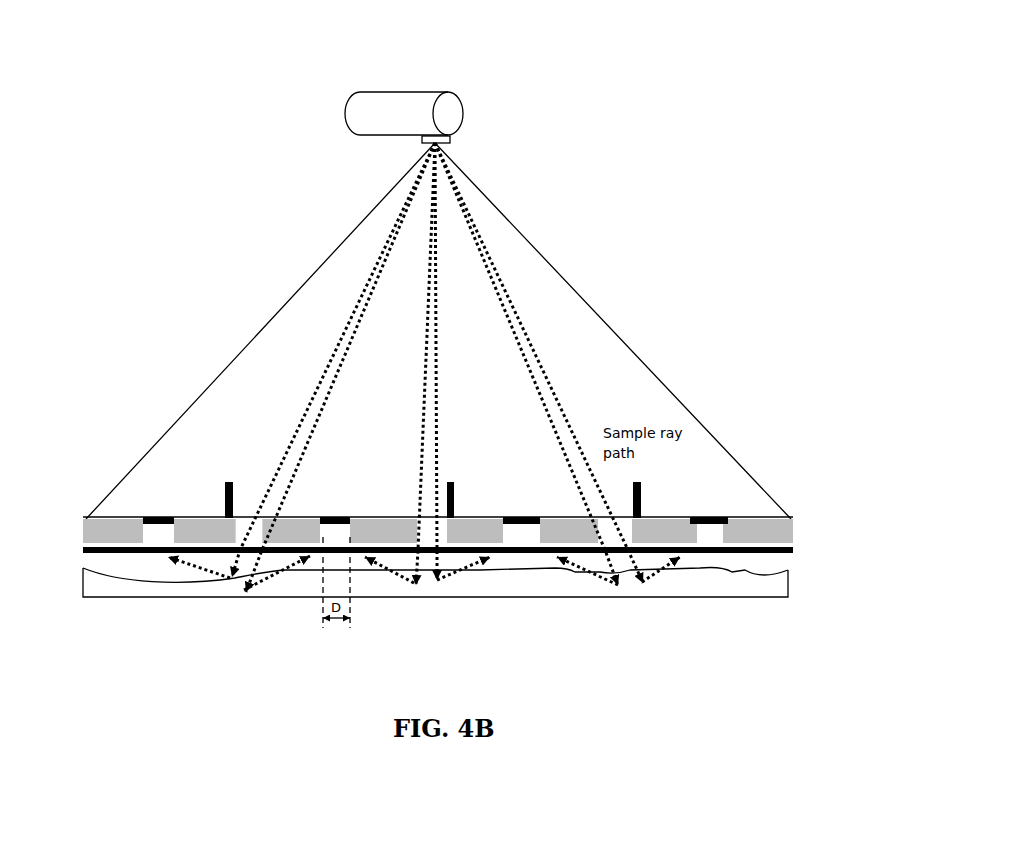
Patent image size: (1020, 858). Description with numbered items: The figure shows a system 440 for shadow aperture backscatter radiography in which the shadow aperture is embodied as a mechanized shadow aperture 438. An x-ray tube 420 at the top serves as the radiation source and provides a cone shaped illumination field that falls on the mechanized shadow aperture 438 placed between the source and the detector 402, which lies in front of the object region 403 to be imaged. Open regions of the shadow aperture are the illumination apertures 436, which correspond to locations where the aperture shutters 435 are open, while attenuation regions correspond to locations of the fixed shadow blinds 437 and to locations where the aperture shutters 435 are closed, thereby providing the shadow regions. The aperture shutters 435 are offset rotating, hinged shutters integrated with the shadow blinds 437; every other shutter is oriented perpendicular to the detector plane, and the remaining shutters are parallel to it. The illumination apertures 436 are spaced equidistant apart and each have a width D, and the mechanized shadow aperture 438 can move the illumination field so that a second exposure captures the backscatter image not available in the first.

The detector 402 is at (188, 548).
The object region 403 is at (788, 583).
The x-ray tube 420 is at (401, 90).
The aperture shutters 435 is at (645, 498).
The illumination apertures 436 is at (248, 517).
The shadow blinds 437 is at (763, 533).
The mechanized shadow aperture 438 is at (88, 533).
The system 440 is at (668, 672).